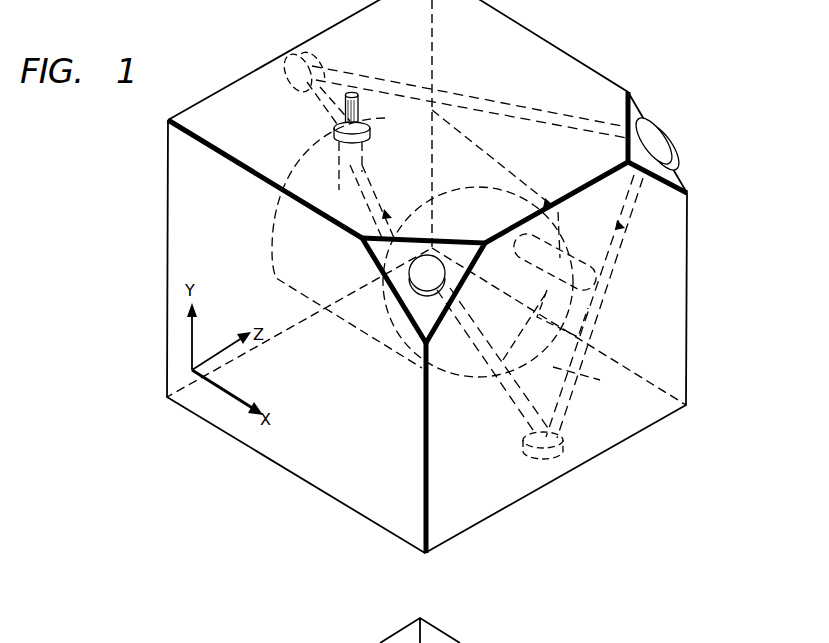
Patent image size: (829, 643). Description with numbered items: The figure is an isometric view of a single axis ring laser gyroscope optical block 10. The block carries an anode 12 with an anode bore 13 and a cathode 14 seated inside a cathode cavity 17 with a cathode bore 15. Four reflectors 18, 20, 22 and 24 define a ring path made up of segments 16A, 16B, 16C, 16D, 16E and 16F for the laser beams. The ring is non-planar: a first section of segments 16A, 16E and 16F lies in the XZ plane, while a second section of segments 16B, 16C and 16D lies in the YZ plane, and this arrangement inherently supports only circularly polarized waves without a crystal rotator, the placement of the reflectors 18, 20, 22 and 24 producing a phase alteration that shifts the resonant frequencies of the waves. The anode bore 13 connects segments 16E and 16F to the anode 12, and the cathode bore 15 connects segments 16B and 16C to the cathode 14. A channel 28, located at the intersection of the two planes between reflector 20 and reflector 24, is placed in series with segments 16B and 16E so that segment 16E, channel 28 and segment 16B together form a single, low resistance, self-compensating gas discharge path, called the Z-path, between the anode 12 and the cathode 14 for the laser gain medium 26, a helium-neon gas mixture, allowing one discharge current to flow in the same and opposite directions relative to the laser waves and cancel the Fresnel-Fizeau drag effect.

The laser gyroscope optical block 10 is at (134, 331).
The anode 12 is at (372, 126).
The anode bore 13 is at (368, 153).
The cathode 14 is at (358, 329).
The cathode bore 15 is at (555, 283).
The ring path segment 16A is at (455, 97).
The ring path segment 16B is at (615, 262).
The ring path segment 16C is at (584, 366).
The ring path segment 16D is at (494, 383).
The ring path segment 16E is at (363, 197).
The ring path segment 16F is at (310, 97).
The cathode cavity 17 is at (310, 336).
The reflector 18 is at (287, 57).
The reflector 20 is at (664, 141).
The reflector 22 is at (560, 461).
The reflector 24 is at (409, 275).
The laser gain medium 26 is at (389, 213).
The channel 28 is at (498, 186).